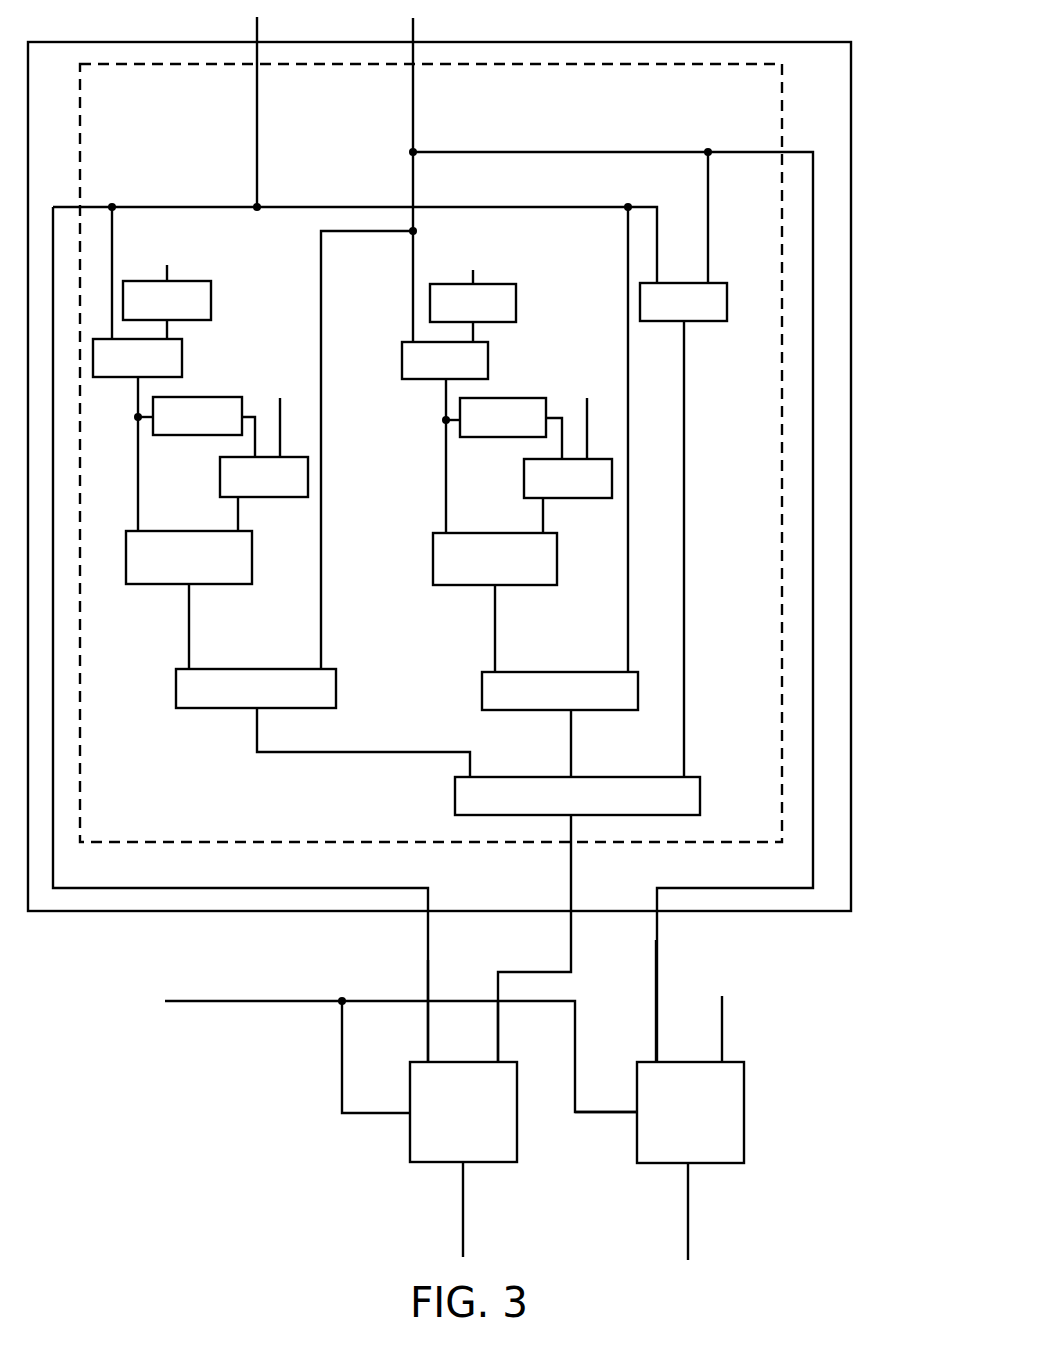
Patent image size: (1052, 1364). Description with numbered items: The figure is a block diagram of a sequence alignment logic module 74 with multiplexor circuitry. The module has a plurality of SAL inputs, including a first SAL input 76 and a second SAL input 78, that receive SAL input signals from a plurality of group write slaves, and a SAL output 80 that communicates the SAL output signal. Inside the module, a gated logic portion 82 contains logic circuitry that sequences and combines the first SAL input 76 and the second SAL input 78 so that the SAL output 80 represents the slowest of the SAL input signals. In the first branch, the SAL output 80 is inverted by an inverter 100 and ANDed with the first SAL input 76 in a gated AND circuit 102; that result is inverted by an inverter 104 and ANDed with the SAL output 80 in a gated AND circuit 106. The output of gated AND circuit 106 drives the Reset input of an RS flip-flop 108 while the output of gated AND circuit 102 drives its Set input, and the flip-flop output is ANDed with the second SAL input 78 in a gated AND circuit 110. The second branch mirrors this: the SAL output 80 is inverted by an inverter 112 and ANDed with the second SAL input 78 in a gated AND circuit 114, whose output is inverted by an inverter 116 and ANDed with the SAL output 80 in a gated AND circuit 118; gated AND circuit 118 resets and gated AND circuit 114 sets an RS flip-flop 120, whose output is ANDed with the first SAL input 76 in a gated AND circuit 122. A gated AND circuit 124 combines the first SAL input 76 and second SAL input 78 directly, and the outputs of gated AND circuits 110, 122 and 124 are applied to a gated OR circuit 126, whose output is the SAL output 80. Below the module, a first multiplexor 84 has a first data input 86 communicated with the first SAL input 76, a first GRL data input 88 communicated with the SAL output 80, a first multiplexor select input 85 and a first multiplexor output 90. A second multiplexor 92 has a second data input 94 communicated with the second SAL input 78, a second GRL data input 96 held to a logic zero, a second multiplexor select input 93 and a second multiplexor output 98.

The sequence alignment logic module 74 is at (866, 94).
The first SAL input 76 is at (259, 31).
The second SAL input 78 is at (415, 32).
The SAL output 80 is at (570, 840).
The gated logic portion 82 is at (779, 562).
The first multiplexor 84 is at (408, 1158).
The first multiplexor select input 85 is at (408, 1117).
The first data input 86 is at (428, 1061).
The first GRL data input 88 is at (498, 1061).
The first multiplexor output 90 is at (458, 1165).
The second multiplexor 92 is at (745, 1148).
The second multiplexor select input 93 is at (636, 1113).
The second data input 94 is at (655, 1061).
The second GRL data input 96 is at (722, 1061).
The second multiplexor output 98 is at (684, 1165).
The inverter 100 is at (212, 300).
The gated AND circuit 102 is at (183, 362).
The inverter 104 is at (182, 436).
The gated AND circuit 106 is at (293, 498).
The RS flip-flop 108 is at (165, 585).
The gated AND circuit 110 is at (186, 709).
The inverter 112 is at (517, 304).
The gated AND circuit 114 is at (402, 352).
The inverter 116 is at (503, 397).
The gated AND circuit 118 is at (572, 499).
The RS flip-flop 120 is at (433, 552).
The gated AND circuit 122 is at (482, 692).
The gated AND circuit 124 is at (697, 322).
The gated OR circuit 126 is at (455, 806).